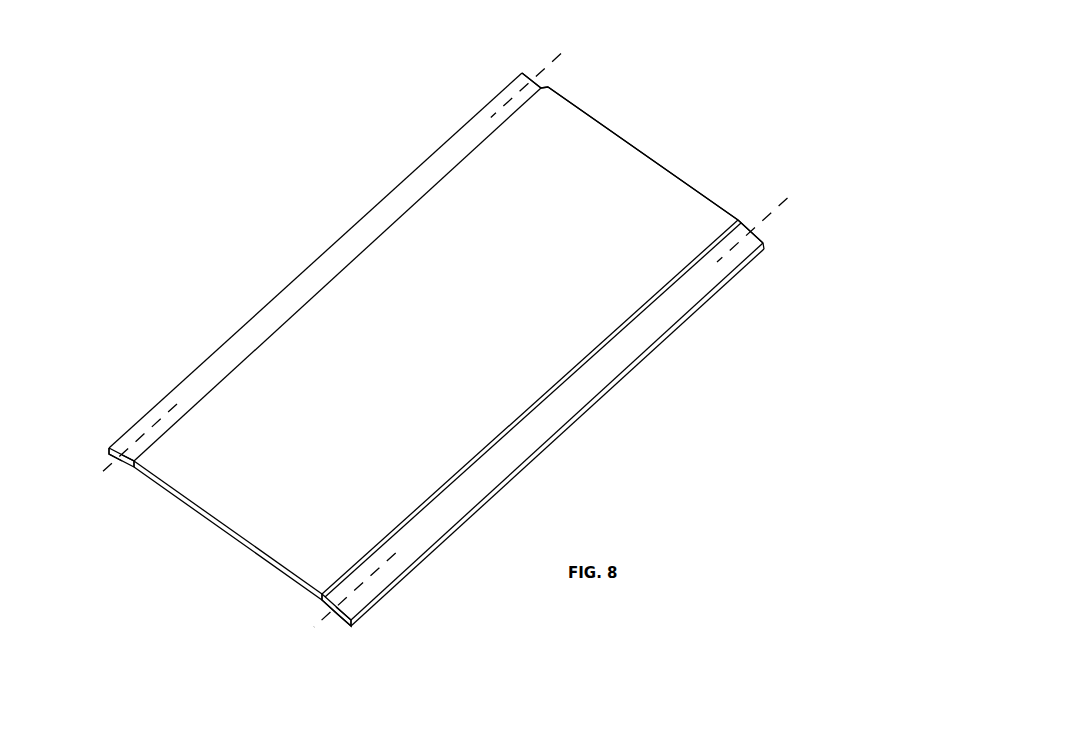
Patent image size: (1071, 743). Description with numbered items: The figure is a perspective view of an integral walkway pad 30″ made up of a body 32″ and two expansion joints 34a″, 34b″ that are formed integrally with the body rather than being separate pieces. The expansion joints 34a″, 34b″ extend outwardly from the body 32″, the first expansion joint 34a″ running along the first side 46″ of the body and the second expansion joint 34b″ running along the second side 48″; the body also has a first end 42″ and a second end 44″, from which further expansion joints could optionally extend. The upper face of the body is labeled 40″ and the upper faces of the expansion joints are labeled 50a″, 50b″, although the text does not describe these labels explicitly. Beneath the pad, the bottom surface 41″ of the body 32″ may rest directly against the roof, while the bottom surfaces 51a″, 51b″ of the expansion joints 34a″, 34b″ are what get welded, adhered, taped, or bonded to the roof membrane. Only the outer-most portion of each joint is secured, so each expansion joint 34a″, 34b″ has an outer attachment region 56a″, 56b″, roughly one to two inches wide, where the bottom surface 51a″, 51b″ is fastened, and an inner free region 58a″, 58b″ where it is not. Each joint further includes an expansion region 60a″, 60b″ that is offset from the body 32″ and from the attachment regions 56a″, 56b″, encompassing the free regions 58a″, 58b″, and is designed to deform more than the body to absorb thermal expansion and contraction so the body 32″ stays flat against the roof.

The walkway pad 30 is at (689, 45).
The body 32 is at (648, 185).
The expansion joint 34a is at (382, 218).
The expansion joint 34b is at (558, 410).
The central portion 40 is at (477, 338).
The bottom surface of body 41 is at (247, 555).
The first end of body 42 is at (625, 140).
The second end of body 44 is at (227, 537).
The first side of body 46 is at (327, 287).
The second side of body 48 is at (620, 337).
The first score line 50a is at (207, 370).
The second score line 50b is at (417, 537).
The bottom surface of expansion joint 51a is at (147, 487).
The bottom surface of expansion joint 51b is at (373, 607).
The outer attachment region 56a is at (98, 463).
The outer attachment region 56b is at (335, 636).
The inner free region 58a is at (130, 485).
The inner free region 58b is at (298, 615).
The expansion region 60a is at (534, 76).
The expansion region 60b is at (734, 232).